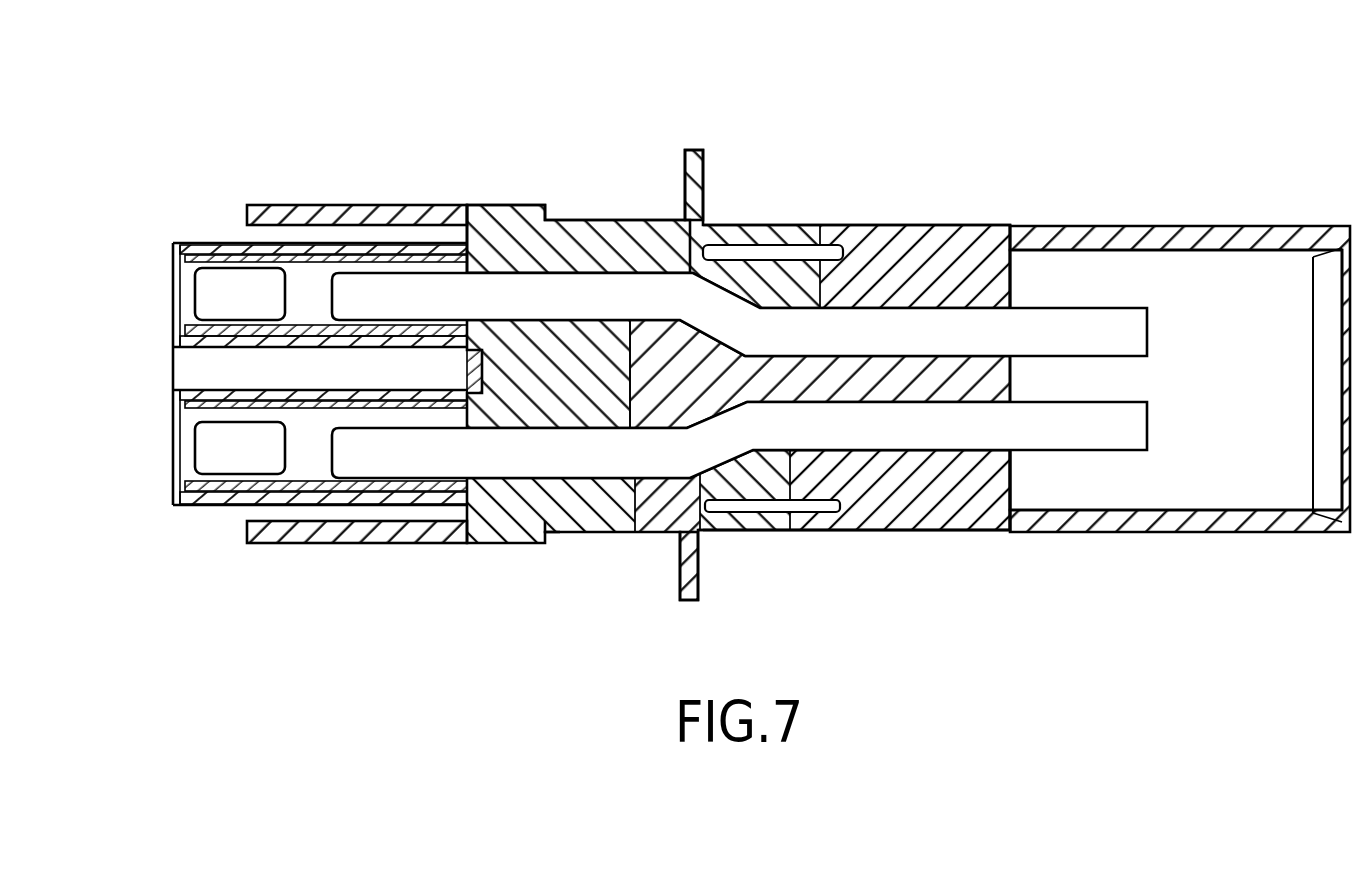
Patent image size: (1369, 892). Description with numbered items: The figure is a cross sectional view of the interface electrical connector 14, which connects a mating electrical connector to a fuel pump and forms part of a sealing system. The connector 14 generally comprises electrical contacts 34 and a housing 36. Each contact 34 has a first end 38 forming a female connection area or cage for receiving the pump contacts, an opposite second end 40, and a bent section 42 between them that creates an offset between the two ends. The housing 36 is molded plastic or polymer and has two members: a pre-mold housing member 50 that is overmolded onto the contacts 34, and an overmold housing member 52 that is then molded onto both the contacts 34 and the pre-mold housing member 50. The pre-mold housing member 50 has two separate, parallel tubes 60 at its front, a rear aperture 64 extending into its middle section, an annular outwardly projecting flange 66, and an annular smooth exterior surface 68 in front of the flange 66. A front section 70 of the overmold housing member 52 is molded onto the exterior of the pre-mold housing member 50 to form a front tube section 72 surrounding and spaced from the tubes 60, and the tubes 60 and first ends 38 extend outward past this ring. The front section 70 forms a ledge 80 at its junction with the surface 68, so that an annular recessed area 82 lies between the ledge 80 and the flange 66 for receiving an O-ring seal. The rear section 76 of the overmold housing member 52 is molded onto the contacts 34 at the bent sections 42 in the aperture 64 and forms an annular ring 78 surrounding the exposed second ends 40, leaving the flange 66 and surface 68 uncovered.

The interface electrical connector 14 is at (346, 102).
The electrical contact 34 is at (208, 293).
The housing 36 is at (940, 225).
The first end 38 is at (180, 272).
The second end 40 is at (1125, 432).
The bent section 42 is at (813, 330).
The pre-mold housing member 50 is at (563, 221).
The overmold housing member 52 is at (500, 542).
The tubes 60 is at (202, 247).
The rear aperture 64 is at (828, 502).
The flange 66 is at (684, 192).
The smooth exterior surface 68 is at (598, 221).
The front section 70 is at (321, 543).
The front tube section 72 is at (428, 543).
The rear section 76 is at (1160, 533).
The annular ring 78 is at (1205, 227).
The ledge 80 is at (545, 540).
The annular recessed area 82 is at (622, 533).